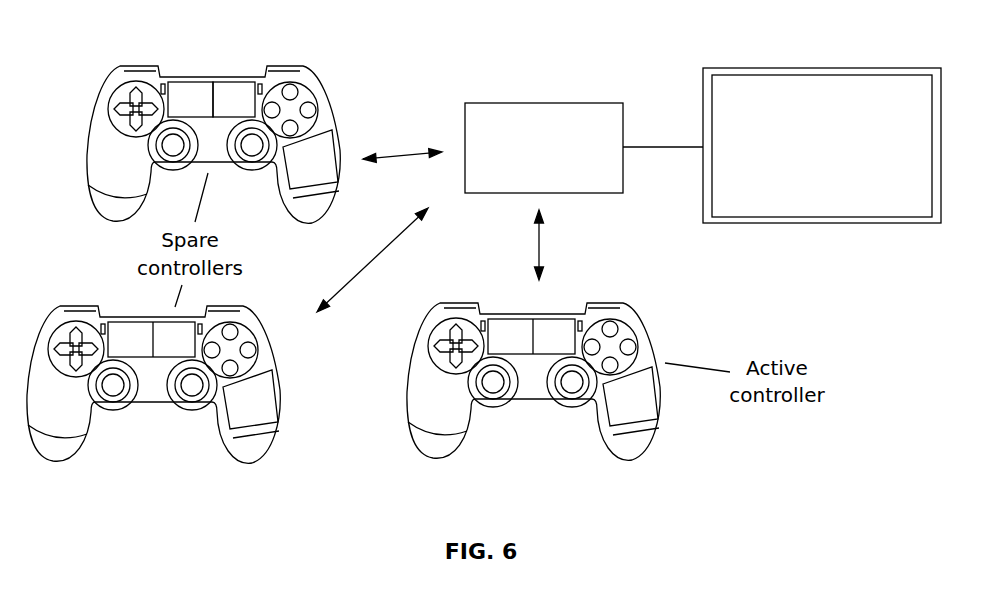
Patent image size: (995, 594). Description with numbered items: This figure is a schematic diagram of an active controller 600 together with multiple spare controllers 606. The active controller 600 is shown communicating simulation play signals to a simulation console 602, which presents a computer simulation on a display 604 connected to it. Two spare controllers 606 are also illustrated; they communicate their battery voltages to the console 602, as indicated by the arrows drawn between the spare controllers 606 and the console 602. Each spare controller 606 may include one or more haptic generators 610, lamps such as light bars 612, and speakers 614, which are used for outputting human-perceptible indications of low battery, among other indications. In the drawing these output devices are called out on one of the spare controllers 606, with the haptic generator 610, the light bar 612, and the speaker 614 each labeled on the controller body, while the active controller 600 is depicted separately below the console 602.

The active controller 600 is at (638, 320).
The simulation console 602 is at (562, 103).
The display 604 is at (875, 68).
The spare controller 606 is at (208, 244).
The haptic generator 610 is at (327, 143).
The light bar 612 is at (240, 80).
The speaker 614 is at (187, 77).